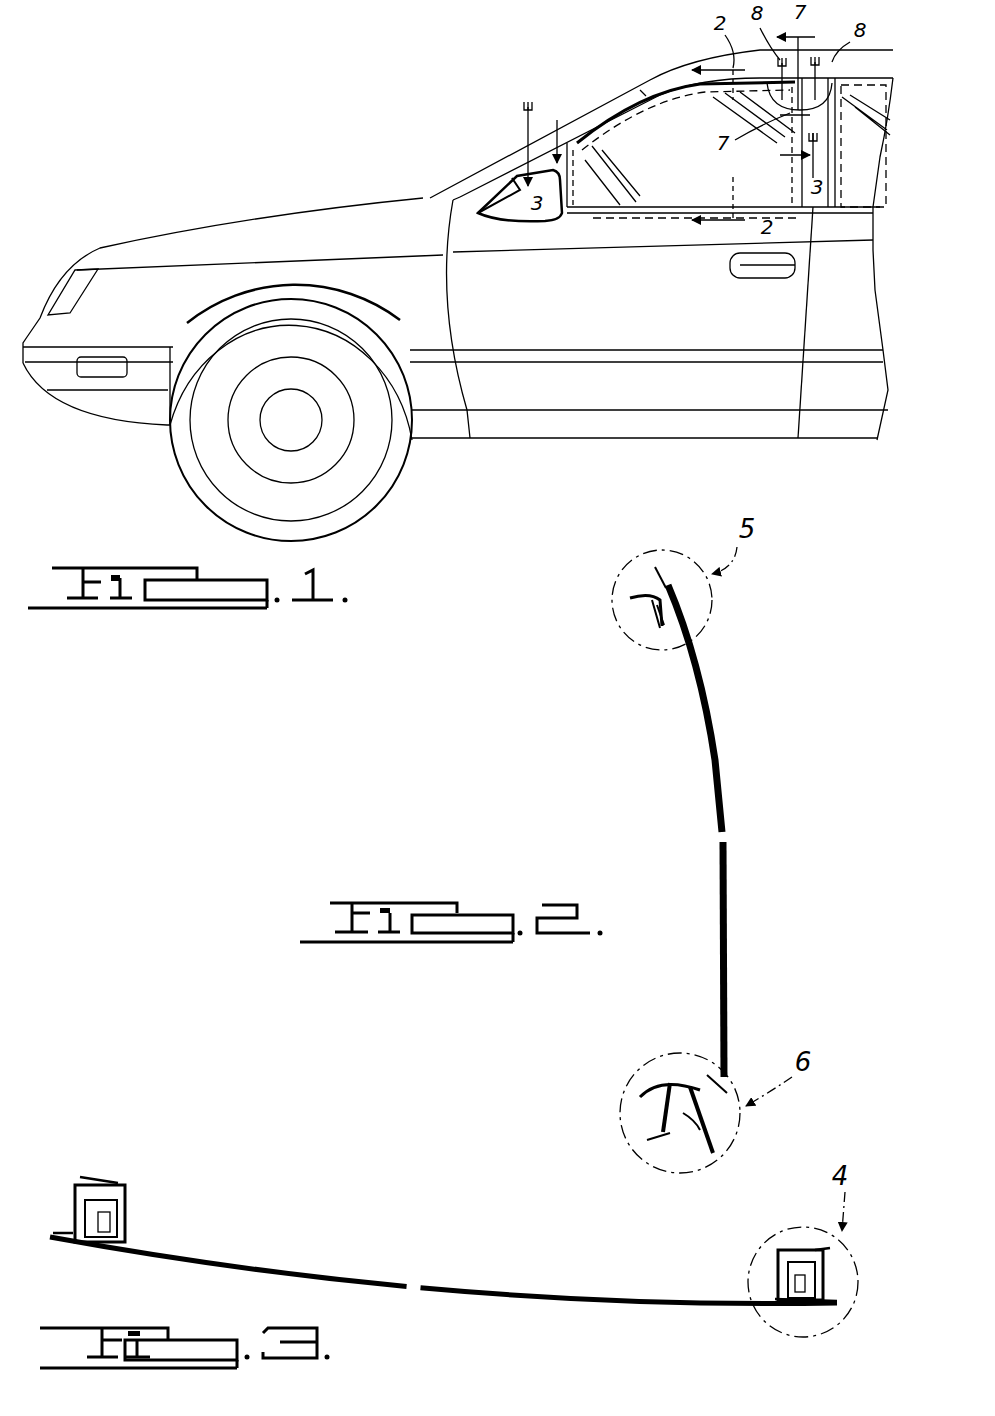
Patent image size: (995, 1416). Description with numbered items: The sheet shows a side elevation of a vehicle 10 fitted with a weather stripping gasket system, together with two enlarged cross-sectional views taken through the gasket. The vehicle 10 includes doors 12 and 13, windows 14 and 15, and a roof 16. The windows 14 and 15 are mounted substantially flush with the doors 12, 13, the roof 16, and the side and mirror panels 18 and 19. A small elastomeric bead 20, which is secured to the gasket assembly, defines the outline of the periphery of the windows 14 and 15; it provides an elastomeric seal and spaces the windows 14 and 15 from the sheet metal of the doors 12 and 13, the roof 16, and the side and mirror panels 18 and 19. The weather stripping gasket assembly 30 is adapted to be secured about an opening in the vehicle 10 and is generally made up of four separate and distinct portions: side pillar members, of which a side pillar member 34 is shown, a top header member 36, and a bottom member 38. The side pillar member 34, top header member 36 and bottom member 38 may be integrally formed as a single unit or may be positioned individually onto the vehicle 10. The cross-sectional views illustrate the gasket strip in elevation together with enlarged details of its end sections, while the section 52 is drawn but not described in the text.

In FIG. 1, the vehicle 10 is at (225, 214).
In FIG. 1, the door 12 is at (611, 334).
In FIG. 1, the door 13 is at (828, 311).
In FIG. 1, the window 14 is at (690, 188).
In FIG. 2, the window 14 is at (716, 725).
In FIG. 3, the window 14 is at (420, 1270).
In FIG. 1, the window 15 is at (870, 150).
In FIG. 1, the roof 16 is at (678, 62).
In FIG. 1, the side panel 18 is at (832, 172).
In FIG. 1, the mirror panel 19 is at (560, 172).
In FIG. 1, the elastomeric bead 20 is at (652, 204).
In FIG. 1, the weather stripping gasket assembly 30 is at (607, 222).
In FIG. 1, the side pillar member 34 is at (655, 112).
In FIG. 3, the side pillar member 34 is at (141, 1218).
In FIG. 1, the top header member 36 is at (677, 100).
In FIG. 2, the top header member 36 is at (646, 617).
In FIG. 1, the bottom member 38 is at (659, 220).
In FIG. 2, the bottom member 38 is at (657, 1072).
In FIG. 1, the rear glass run channel section 52 is at (792, 190).
In FIG. 3, the rear glass run channel section 52 is at (770, 1285).